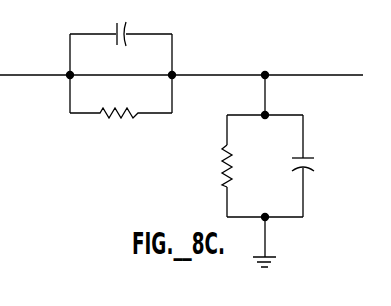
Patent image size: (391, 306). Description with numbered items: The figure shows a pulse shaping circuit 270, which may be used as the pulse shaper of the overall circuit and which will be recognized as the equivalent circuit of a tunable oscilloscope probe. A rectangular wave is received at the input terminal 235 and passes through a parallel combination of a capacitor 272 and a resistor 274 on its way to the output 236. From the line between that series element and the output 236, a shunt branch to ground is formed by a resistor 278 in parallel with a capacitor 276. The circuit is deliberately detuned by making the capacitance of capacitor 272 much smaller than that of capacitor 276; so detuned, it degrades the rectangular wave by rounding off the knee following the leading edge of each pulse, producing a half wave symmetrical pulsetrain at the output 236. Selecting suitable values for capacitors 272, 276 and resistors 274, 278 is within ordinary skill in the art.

The input terminal 235 is at (35, 74).
The output 236 is at (341, 74).
The pulse shaping circuit 270 is at (233, 62).
The capacitor 272 is at (124, 21).
The resistor 274 is at (116, 119).
The capacitor 276 is at (316, 166).
The resistor 278 is at (219, 178).